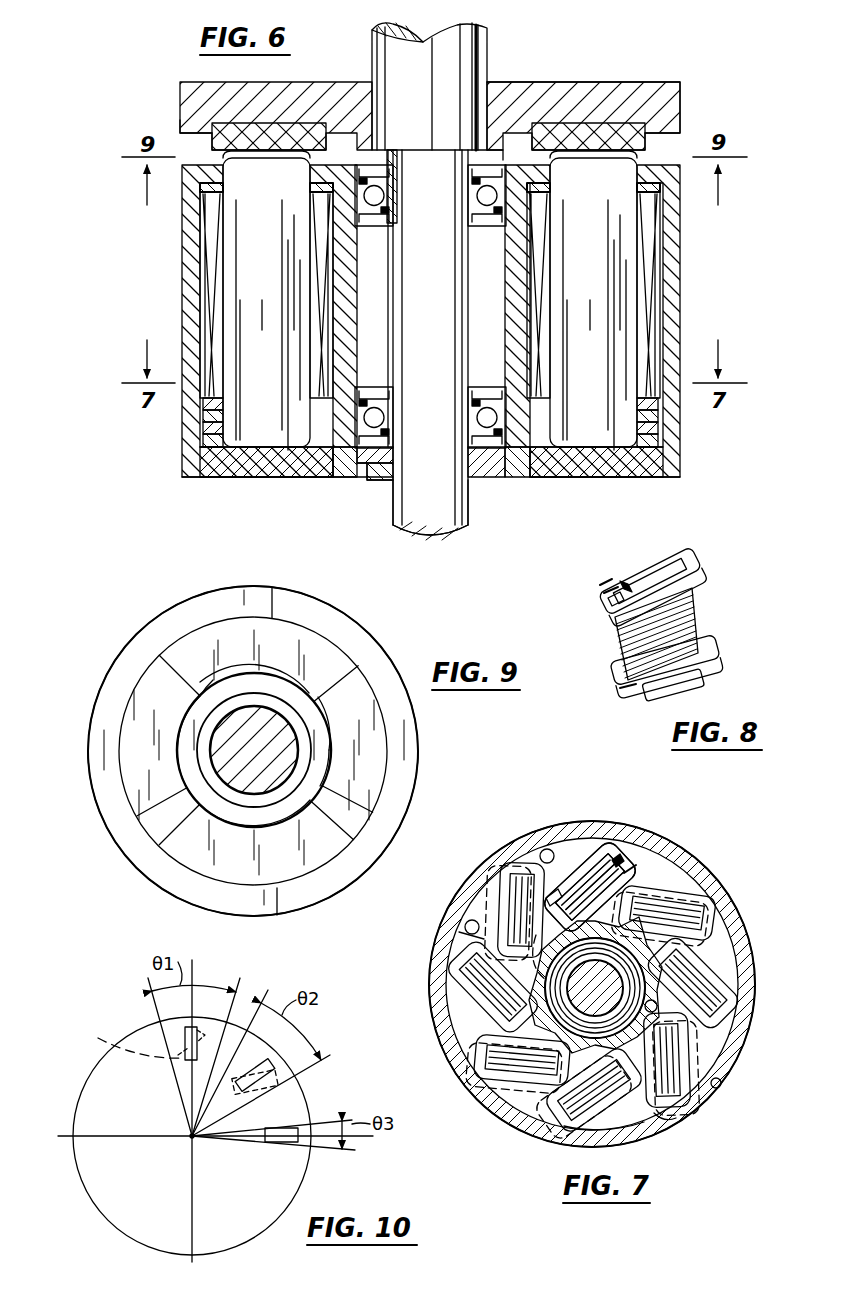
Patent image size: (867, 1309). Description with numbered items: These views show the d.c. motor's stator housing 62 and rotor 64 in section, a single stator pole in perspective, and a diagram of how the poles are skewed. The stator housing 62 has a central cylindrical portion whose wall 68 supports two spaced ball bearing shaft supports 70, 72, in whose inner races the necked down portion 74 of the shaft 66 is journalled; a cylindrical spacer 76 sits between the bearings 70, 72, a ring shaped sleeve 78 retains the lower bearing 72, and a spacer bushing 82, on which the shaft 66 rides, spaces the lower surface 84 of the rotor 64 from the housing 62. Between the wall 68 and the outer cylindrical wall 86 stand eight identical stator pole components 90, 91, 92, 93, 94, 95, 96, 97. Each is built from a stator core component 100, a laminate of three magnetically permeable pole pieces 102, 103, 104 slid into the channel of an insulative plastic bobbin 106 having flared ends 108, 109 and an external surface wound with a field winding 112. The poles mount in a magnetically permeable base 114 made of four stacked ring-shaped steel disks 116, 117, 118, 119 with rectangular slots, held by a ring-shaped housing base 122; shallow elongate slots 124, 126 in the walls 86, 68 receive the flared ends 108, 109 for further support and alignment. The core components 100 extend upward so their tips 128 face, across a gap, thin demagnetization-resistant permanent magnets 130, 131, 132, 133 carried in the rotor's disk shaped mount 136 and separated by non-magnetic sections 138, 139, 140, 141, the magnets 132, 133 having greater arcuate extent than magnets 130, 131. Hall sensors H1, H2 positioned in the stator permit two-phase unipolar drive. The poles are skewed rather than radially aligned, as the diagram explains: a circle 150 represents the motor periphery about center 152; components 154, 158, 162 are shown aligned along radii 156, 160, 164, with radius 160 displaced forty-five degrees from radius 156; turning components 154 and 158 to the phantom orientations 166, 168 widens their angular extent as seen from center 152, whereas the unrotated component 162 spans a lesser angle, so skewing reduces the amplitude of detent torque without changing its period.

In FIG. 6, the stator housing 62 is at (690, 472).
In FIG. 7, the stator housing 62 is at (770, 805).
In FIG. 6, the rotor 64 is at (686, 91).
In FIG. 9, the rotor 64 is at (152, 898).
In FIG. 6, the shaft 66 is at (488, 38).
In FIG. 9, the shaft 66 is at (280, 748).
In FIG. 6, the wall 68 is at (343, 470).
In FIG. 7, the wall 68 is at (648, 1124).
In FIG. 6, the ball bearing shaft support 70 is at (496, 163).
In FIG. 6, the ball bearing shaft support 72 is at (365, 465).
In FIG. 7, the ball bearing shaft support 72 is at (530, 1013).
In FIG. 6, the necked down portion of shaft 74 is at (470, 530).
In FIG. 7, the necked down portion of shaft 74 is at (587, 999).
In FIG. 6, the cylindrical spacer 76 is at (370, 312).
In FIG. 7, the cylindrical spacer 76 is at (658, 954).
In FIG. 6, the ring shaped sleeve 78 is at (380, 482).
In FIG. 6, the bushing 82 is at (386, 160).
In FIG. 6, the lower surface 84 is at (179, 132).
In FIG. 6, the outer cylindrical wall 86 is at (190, 258).
In FIG. 7, the outer cylindrical wall 86 is at (715, 878).
In FIG. 7, the stator pole component 90 is at (560, 856).
In FIG. 7, the stator pole component 91 is at (712, 911).
In FIG. 7, the stator pole component 92 is at (714, 1006).
In FIG. 7, the stator pole component 93 is at (679, 1118).
In FIG. 7, the stator pole component 94 is at (568, 1120).
In FIG. 7, the stator pole component 95 is at (478, 1066).
In FIG. 7, the stator pole component 96 is at (455, 960).
In FIG. 7, the stator pole component 97 is at (502, 868).
In FIG. 6, the stator core component 100 is at (272, 220).
In FIG. 8, the stator core component 100 is at (655, 616).
In FIG. 8, the pole piece 102 is at (630, 574).
In FIG. 7, the pole piece 102 is at (602, 853).
In FIG. 8, the pole piece 103 is at (612, 600).
In FIG. 7, the pole piece 103 is at (628, 848).
In FIG. 8, the pole piece 104 is at (618, 618).
In FIG. 7, the pole piece 104 is at (632, 865).
In FIG. 6, the bobbin 106 is at (210, 285).
In FIG. 8, the bobbin 106 is at (700, 640).
In FIG. 7, the bobbin 106 is at (579, 868).
In FIG. 6, the flared end 108 is at (205, 189).
In FIG. 8, the flared end 108 is at (690, 572).
In FIG. 6, the flared end 109 is at (205, 402).
In FIG. 8, the flared end 109 is at (630, 690).
In FIG. 7, the flared end 109 is at (644, 878).
In FIG. 8, the field winding 112 is at (695, 600).
In FIG. 6, the base 114 is at (652, 428).
In FIG. 7, the base 114 is at (462, 932).
In FIG. 6, the steel disk 116 is at (205, 415).
In FIG. 6, the steel disk 117 is at (208, 430).
In FIG. 6, the steel disk 118 is at (210, 440).
In FIG. 6, the steel disk 119 is at (210, 460).
In FIG. 6, the housing base 122 is at (263, 478).
In FIG. 7, the slot 124 is at (659, 1006).
In FIG. 7, the slot 126 is at (692, 1055).
In FIG. 6, the tip 128 is at (223, 160).
In FIG. 6, the permanent magnet 130 is at (282, 128).
In FIG. 9, the permanent magnet 130 is at (140, 712).
In FIG. 6, the permanent magnet 131 is at (593, 130).
In FIG. 9, the permanent magnet 131 is at (378, 770).
In FIG. 9, the permanent magnet 132 is at (320, 648).
In FIG. 9, the permanent magnet 133 is at (287, 868).
In FIG. 6, the disk shaped mount 136 is at (515, 97).
In FIG. 9, the disk shaped mount 136 is at (215, 603).
In FIG. 9, the non-magnetic section 138 is at (352, 683).
In FIG. 9, the non-magnetic section 139 is at (348, 822).
In FIG. 9, the non-magnetic section 140 is at (158, 840).
In FIG. 9, the non-magnetic section 141 is at (157, 680).
In FIG. 10, the circle 150 is at (88, 1192).
In FIG. 10, the center 152 is at (195, 1140).
In FIG. 10, the stator pole component 154 is at (185, 1030).
In FIG. 10, the radius 156 is at (196, 975).
In FIG. 10, the stator component 158 is at (275, 1075).
In FIG. 10, the radius 160 is at (312, 1025).
In FIG. 10, the stator pole component 162 is at (290, 1142).
In FIG. 10, the radius 164 is at (362, 1138).
In FIG. 10, the phantom orientation 166 is at (110, 1040).
In FIG. 10, the phantom orientation 168 is at (280, 1090).
In FIG. 7, the sensor H1 is at (466, 922).
In FIG. 7, the sensor H2 is at (540, 852).